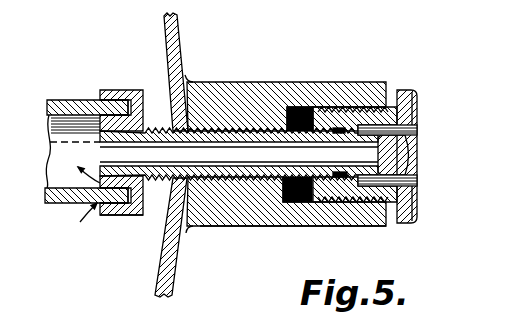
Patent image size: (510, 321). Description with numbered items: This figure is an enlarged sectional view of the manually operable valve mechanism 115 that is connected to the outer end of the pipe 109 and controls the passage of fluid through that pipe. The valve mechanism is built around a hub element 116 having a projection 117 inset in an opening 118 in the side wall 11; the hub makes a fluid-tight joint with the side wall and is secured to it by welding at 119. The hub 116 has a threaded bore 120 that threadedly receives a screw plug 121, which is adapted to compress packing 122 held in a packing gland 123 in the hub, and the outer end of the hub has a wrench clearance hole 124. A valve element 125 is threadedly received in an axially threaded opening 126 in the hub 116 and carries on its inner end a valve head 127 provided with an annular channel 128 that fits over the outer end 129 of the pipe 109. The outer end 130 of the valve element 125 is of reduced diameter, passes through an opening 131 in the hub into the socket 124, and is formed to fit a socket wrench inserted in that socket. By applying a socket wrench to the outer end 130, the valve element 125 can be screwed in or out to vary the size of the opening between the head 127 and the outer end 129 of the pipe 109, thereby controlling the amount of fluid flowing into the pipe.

The side wall 11 is at (172, 283).
The pipe 109 is at (67, 100).
The valve mechanism 115 is at (204, 51).
The hub element 116 is at (221, 90).
The projection 117 is at (178, 117).
The opening 118 is at (165, 188).
The welding 119 is at (187, 229).
The threaded bore 120 is at (377, 108).
The screw plug 121 is at (343, 108).
The packing 122 is at (312, 108).
The packing gland 123 is at (277, 108).
The wrench clearance hole 124 is at (417, 127).
The valve element 125 is at (264, 226).
The axially threaded opening 126 is at (228, 180).
The valve head 127 is at (128, 100).
The annular channel 128 is at (93, 100).
The outer end of the pipe 129 is at (107, 215).
The outer end of the valve element 130 is at (395, 176).
The opening 131 is at (362, 176).